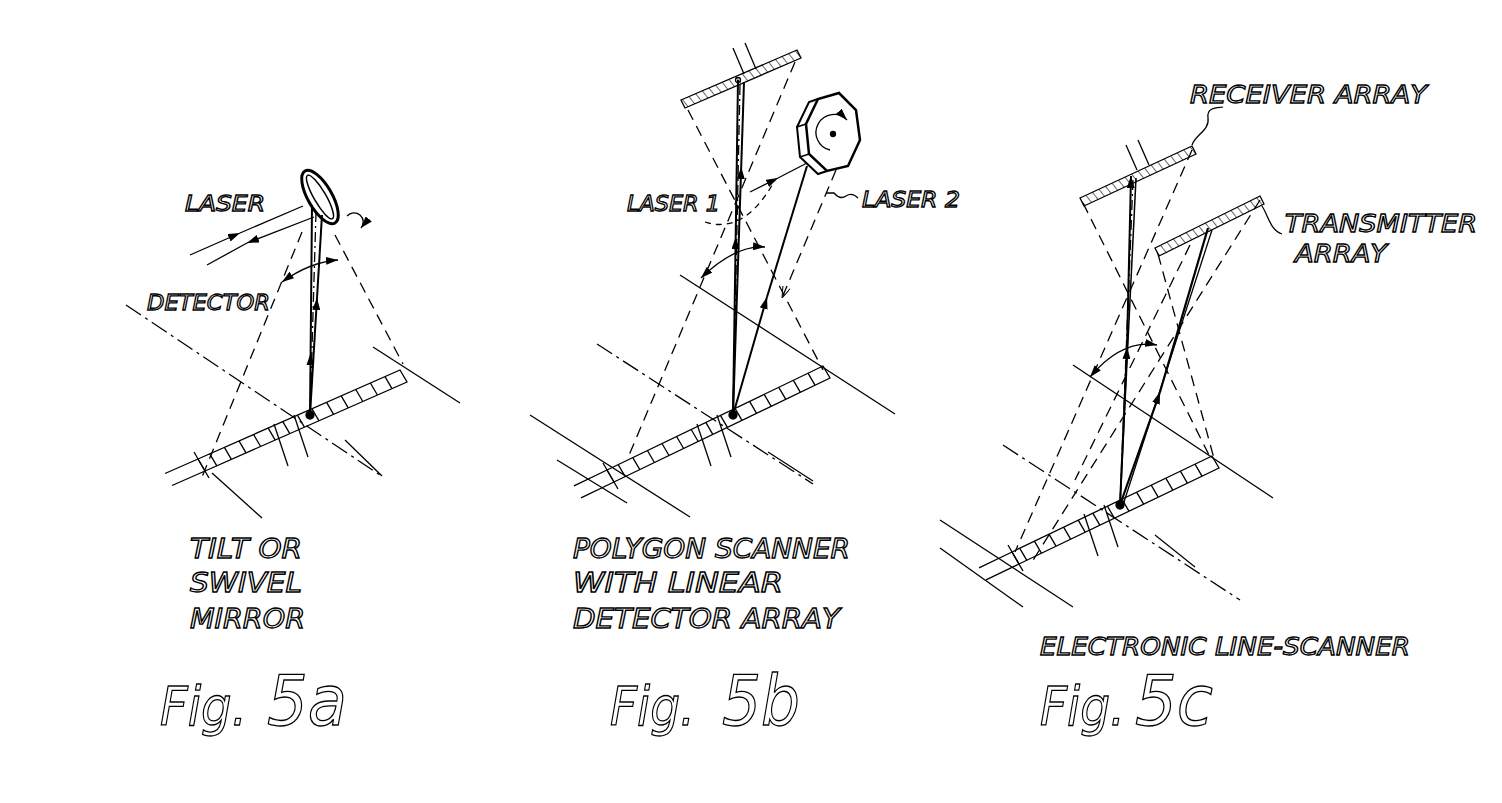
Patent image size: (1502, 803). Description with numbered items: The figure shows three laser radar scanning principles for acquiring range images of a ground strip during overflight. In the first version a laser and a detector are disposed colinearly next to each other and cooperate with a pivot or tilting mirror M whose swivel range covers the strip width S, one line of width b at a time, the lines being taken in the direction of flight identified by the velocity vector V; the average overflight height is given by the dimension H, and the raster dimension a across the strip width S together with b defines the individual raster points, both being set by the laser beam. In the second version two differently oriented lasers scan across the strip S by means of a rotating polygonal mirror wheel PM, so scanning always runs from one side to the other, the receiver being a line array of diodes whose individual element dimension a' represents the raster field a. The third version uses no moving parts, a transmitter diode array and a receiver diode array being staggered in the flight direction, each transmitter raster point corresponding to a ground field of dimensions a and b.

In FIG. 5A, the pivot or tilting mirror M is at (325, 181).
In FIG. 5B, the polygonal mirror wheel PM is at (830, 99).
In FIG. 5A, the overflight height H is at (137, 90).
In FIG. 5B, the overflight height H is at (608, 115).
In FIG. 5C, the overflight height H is at (1018, 219).
In FIG. 5A, the velocity vector V is at (130, 80).
In FIG. 5B, the velocity vector V is at (603, 112).
In FIG. 5C, the velocity vector V is at (1012, 215).
In FIG. 5A, the strip width S is at (327, 432).
In FIG. 5B, the strip width S is at (712, 396).
In FIG. 5C, the strip width S is at (1106, 486).
In FIG. 5A, the raster dimension a is at (297, 452).
In FIG. 5B, the raster dimension a is at (720, 452).
In FIG. 5C, the raster dimension a is at (1107, 542).
In FIG. 5A, the line width b is at (176, 486).
In FIG. 5B, the line width b is at (599, 488).
In FIG. 5C, the line width b is at (984, 578).
In FIG. 5B, the diode element dimension a' is at (741, 69).
In FIG. 5C, the diode element dimension a' is at (1134, 151).